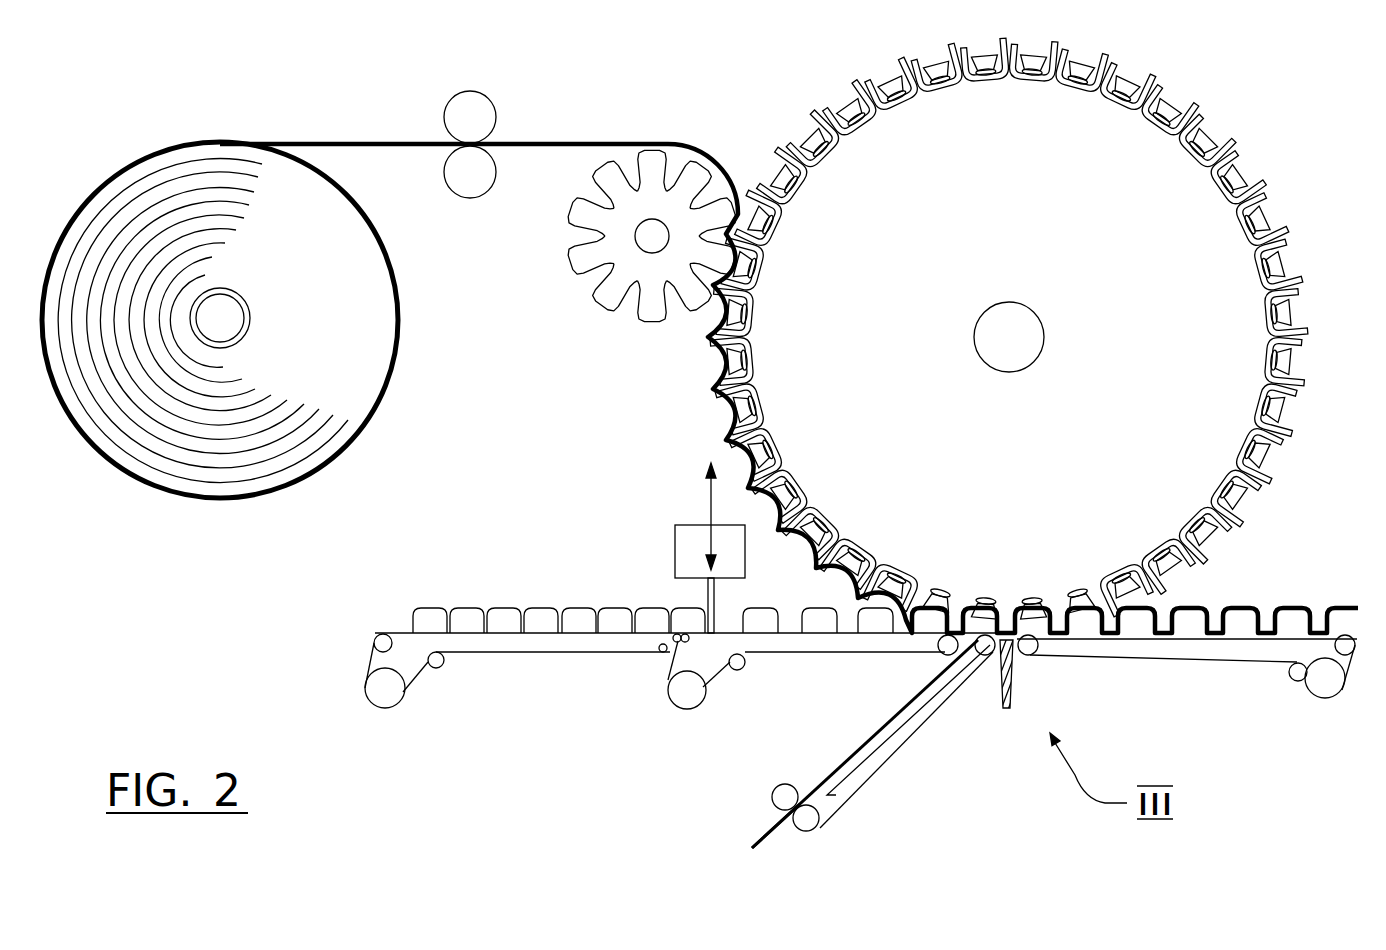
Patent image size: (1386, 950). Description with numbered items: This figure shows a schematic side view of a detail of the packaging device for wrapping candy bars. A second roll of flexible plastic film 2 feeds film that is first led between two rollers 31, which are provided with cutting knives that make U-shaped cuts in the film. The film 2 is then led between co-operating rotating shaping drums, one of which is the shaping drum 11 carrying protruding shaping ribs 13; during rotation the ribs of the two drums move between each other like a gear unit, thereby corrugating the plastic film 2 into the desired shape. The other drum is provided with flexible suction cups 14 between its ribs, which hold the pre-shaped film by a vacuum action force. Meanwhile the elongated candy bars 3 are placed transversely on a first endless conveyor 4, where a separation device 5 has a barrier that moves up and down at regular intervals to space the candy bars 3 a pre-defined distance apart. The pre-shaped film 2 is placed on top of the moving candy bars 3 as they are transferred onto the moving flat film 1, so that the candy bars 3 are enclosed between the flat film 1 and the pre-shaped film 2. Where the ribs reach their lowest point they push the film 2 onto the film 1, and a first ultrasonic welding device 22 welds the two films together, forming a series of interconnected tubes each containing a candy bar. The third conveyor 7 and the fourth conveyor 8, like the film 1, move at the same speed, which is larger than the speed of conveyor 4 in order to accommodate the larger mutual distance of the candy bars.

The flexible plastic film 1 is at (768, 833).
The flexible plastic film 2 is at (220, 281).
The candy bars 3 is at (467, 618).
The first endless conveyor 4 is at (682, 701).
The separation device 5 is at (690, 552).
The third conveyor 7 is at (1187, 705).
The fourth conveyor 8 is at (883, 741).
The shaping drum 11 is at (606, 350).
The shaping ribs 13 is at (601, 240).
The flexible suction cups 14 is at (1008, 328).
The first ultrasonic welding device 22 is at (1051, 678).
The rollers 31 is at (425, 103).